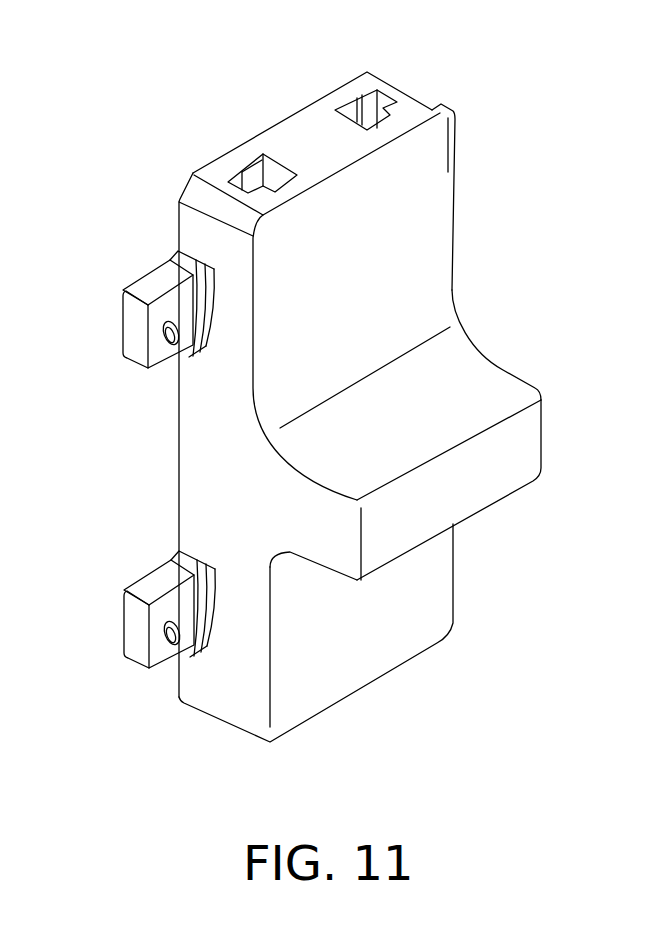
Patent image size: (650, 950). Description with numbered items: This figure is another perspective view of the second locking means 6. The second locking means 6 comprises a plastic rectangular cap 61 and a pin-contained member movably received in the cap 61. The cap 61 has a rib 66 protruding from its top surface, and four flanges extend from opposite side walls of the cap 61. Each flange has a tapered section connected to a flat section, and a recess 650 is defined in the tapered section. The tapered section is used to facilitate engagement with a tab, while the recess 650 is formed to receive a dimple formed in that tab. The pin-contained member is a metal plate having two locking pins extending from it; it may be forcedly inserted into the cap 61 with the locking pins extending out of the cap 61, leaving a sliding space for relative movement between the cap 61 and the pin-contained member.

The second locking means 6 is at (426, 74).
The cap 61 is at (455, 291).
The rib 66 is at (542, 433).
The recess 650 is at (166, 348).